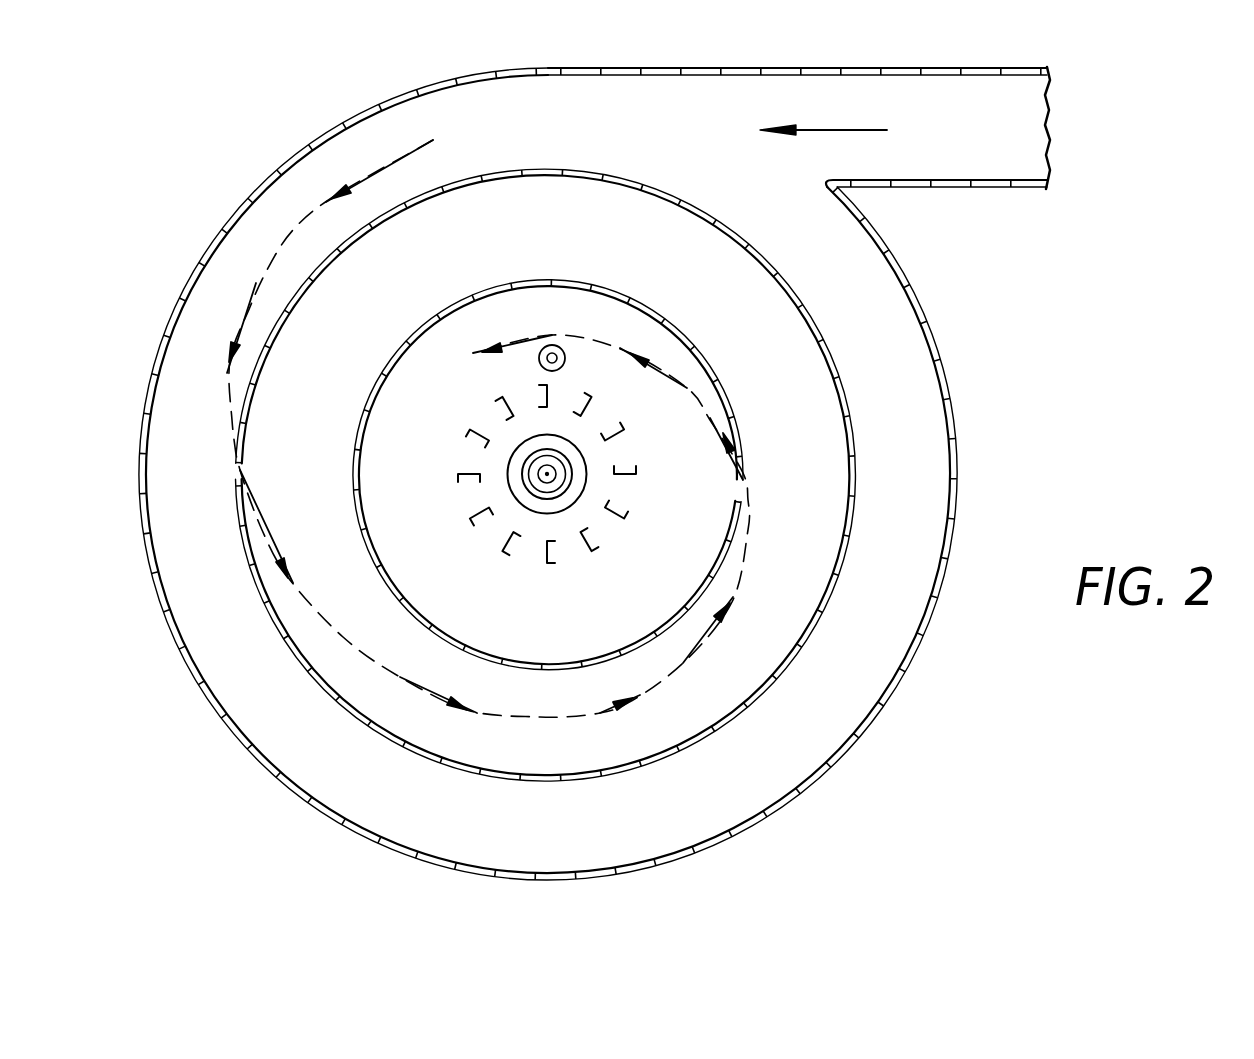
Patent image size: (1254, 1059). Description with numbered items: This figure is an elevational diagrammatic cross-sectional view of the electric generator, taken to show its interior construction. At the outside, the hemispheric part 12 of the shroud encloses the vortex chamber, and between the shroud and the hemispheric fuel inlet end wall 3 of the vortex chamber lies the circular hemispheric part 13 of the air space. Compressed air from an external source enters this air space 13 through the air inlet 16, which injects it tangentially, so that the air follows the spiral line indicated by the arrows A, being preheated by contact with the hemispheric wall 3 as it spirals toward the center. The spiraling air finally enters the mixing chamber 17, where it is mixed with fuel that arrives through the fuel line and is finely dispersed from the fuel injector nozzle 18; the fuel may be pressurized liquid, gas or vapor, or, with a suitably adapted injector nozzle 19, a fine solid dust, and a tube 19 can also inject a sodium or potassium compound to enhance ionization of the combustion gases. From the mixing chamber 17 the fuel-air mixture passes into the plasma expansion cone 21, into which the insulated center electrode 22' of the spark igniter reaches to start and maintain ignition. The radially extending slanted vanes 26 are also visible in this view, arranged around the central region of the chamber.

The hemispheric fuel inlet end wall 3 is at (840, 580).
The hemispheric part of shroud 12 is at (905, 678).
The hemispheric part of air space 13 is at (558, 138).
The air inlet 16 is at (996, 138).
The mixing chamber 17 is at (588, 463).
The fuel injector nozzle 18 is at (545, 485).
The injector nozzle 19 is at (523, 468).
The plasma expansion cone 21 is at (463, 303).
The insulated center electrode 22' is at (577, 369).
The radially extending slanted vanes 26 is at (613, 517).